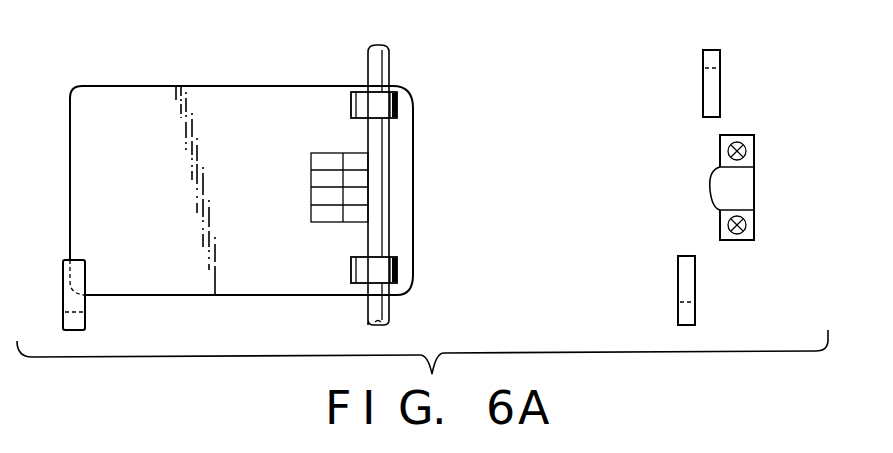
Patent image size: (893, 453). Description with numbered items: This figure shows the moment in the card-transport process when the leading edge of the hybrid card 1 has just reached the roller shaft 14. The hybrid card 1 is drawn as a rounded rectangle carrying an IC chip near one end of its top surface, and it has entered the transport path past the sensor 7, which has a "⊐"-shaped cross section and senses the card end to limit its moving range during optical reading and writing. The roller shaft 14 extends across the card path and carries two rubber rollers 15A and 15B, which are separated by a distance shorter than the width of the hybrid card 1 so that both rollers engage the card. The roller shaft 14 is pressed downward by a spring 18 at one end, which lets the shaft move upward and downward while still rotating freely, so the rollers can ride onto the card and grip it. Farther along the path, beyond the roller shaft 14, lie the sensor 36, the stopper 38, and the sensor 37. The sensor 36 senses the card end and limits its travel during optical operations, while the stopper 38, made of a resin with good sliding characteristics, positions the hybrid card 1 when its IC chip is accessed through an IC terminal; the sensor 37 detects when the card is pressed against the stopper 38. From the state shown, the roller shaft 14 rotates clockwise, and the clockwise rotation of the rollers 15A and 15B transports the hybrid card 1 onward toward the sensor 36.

The hybrid card 1 is at (105, 192).
The sensor 7 is at (66, 322).
The roller shaft 14 is at (389, 57).
The rubber roller 15A is at (398, 100).
The rubber roller 15B is at (398, 268).
The spring 18 is at (311, 184).
The sensor 36 is at (695, 305).
The sensor 37 is at (720, 57).
The stopper 38 is at (754, 170).